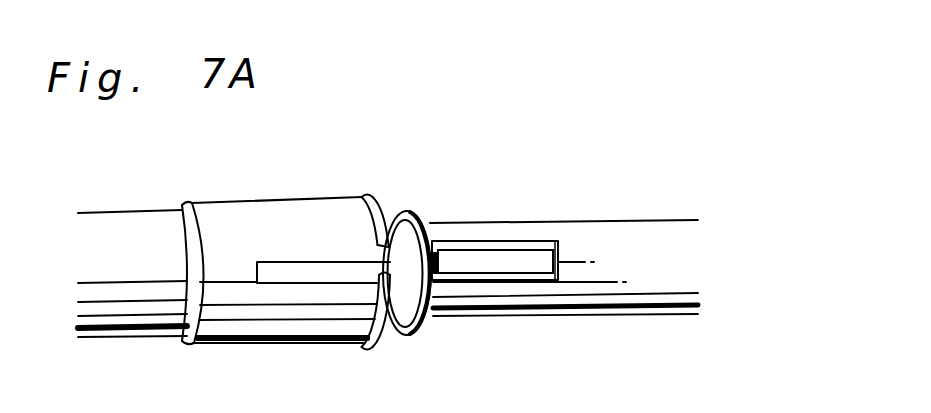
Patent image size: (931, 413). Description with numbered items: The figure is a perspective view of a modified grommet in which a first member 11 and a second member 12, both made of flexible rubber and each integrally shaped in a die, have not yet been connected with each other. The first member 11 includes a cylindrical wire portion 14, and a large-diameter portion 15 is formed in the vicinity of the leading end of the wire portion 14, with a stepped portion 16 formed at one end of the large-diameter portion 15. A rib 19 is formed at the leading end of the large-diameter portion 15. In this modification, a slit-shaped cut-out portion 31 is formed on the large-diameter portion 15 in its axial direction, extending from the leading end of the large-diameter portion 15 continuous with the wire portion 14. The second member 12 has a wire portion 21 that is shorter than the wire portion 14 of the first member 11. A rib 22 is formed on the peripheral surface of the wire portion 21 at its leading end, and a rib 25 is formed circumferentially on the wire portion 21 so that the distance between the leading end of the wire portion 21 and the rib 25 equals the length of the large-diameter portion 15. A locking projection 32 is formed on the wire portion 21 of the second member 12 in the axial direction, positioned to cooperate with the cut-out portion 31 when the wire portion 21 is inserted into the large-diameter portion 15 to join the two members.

The first member 11 is at (244, 196).
The second member 12 is at (600, 211).
The wire portion 14 is at (132, 332).
The large-diameter portion 15 is at (222, 345).
The stepped portion 16 is at (185, 208).
The rib 19 is at (370, 200).
The wire portion 21 is at (545, 233).
The rib 22 is at (403, 330).
The rib 25 is at (555, 318).
The cut-out portion 31 is at (300, 283).
The locking projection 32 is at (492, 263).